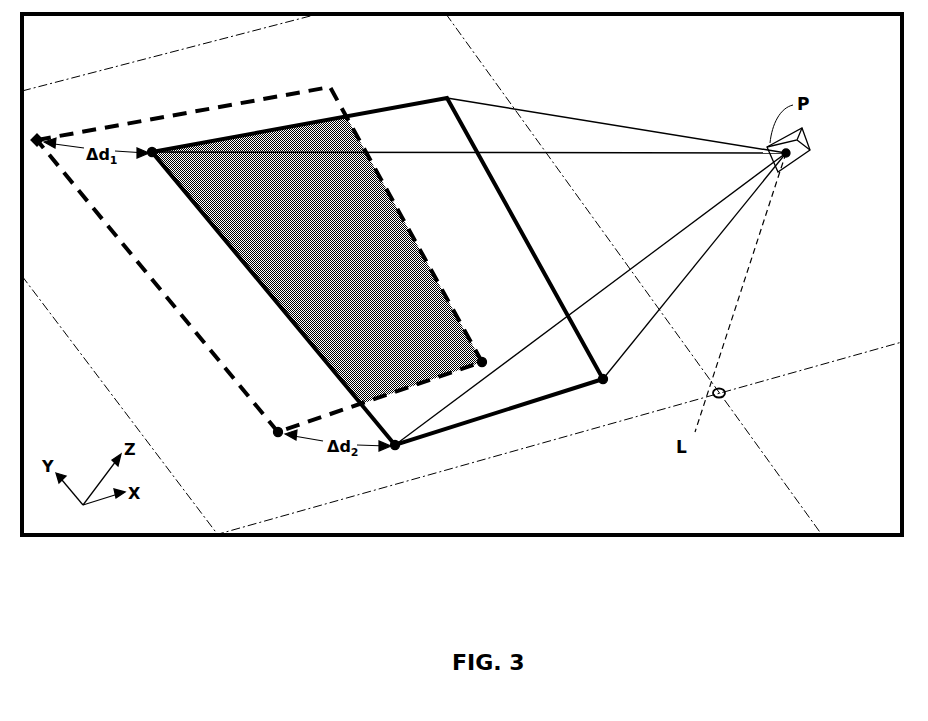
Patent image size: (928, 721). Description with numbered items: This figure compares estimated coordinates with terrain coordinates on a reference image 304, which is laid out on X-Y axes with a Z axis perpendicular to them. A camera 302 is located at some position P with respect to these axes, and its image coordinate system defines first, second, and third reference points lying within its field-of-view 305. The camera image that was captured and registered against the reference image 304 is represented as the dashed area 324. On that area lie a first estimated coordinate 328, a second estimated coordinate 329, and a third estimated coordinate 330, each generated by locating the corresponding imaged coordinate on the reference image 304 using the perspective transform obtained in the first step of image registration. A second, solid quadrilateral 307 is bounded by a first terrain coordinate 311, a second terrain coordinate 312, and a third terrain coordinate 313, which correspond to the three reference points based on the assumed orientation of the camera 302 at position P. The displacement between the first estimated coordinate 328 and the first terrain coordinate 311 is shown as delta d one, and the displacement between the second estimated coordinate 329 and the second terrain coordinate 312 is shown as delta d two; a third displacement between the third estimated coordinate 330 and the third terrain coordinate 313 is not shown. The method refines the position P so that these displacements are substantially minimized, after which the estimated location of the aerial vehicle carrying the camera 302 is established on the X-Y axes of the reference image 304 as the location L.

The camera 302 is at (798, 158).
The reference image 304 is at (843, 428).
The field-of-view 305 is at (627, 115).
The image plane (solid quadrilateral) 307 is at (473, 240).
The first terrain coordinate 311 is at (154, 147).
The second terrain coordinate 312 is at (395, 447).
The third terrain coordinate 313 is at (606, 379).
The area 324 is at (175, 272).
The first estimated coordinate 328 is at (40, 133).
The second estimated coordinate 329 is at (286, 428).
The third estimated coordinate 330 is at (484, 358).